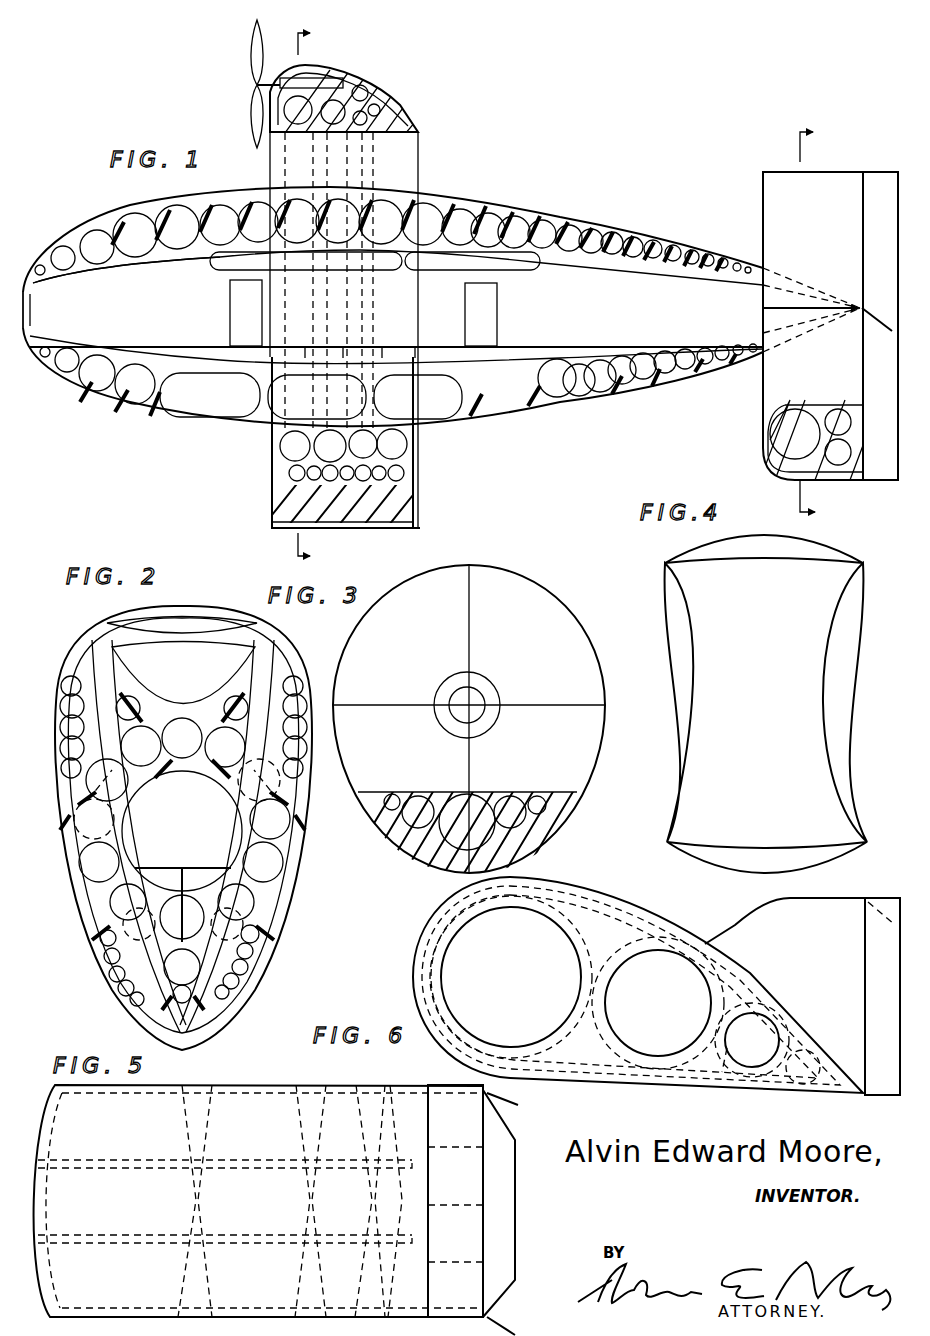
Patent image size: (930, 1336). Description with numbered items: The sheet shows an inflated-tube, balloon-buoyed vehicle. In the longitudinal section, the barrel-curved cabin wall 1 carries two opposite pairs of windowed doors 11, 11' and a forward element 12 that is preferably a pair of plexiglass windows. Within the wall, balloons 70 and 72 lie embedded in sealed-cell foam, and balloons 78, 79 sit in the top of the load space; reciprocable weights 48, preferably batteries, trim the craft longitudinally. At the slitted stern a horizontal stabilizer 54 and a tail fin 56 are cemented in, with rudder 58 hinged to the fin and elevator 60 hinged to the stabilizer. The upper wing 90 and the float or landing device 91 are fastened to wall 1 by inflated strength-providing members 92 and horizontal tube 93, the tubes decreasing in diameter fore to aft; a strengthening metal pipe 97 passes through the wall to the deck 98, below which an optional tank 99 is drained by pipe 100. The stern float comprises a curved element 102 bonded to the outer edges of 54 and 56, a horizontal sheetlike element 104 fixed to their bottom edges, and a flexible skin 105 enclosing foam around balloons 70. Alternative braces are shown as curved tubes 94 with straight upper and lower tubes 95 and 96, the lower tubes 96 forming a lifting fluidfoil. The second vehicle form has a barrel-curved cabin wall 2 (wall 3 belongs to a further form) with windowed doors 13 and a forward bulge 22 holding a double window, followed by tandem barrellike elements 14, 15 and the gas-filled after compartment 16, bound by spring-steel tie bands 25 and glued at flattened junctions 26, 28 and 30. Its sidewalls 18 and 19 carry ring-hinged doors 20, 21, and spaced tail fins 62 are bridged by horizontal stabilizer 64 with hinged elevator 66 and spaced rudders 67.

In FIG. 1, the barrel-curved cabin wall 1 is at (88, 277).
In FIG. 2, the barrel-curved cabin wall 1 is at (142, 786).
In FIG. 1, the barrel-curved cabin wall 2 is at (315, 296).
In FIG. 6, the barrel-curved cabin wall 2 is at (567, 914).
In FIG. 5, the barrel-curved cabin wall 2 is at (50, 1120).
In FIG. 1, the barrel-curved cabin wall 3 is at (822, 321).
In FIG. 3, the barrel-curved cabin wall 3 is at (488, 697).
In FIG. 1, the windowed door 11 is at (246, 313).
In FIG. 1, the windowed door 11' is at (481, 314).
In FIG. 1, the window element 12 is at (33, 311).
In FIG. 6, the windowed door 13 is at (553, 1037).
In FIG. 6, the tandem barrellike element 14 is at (612, 1062).
In FIG. 5, the tandem barrellike element 14 is at (306, 1126).
In FIG. 6, the tandem barrellike element 15 is at (712, 1062).
In FIG. 5, the tandem barrellike element 15 is at (368, 1122).
In FIG. 6, the after compartment 16 is at (803, 1067).
In FIG. 5, the after compartment 16 is at (410, 1105).
In FIG. 6, the vehicle sidewall 18 is at (684, 1054).
In FIG. 6, the vehicle sidewall 19 is at (777, 1024).
In FIG. 6, the door 20 is at (669, 994).
In FIG. 6, the door 21 is at (762, 1050).
In FIG. 5, the forward bulge 22 is at (38, 1272).
In FIG. 6, the tie band 25 is at (632, 918).
In FIG. 5, the tie band 25 is at (68, 1168).
In FIG. 5, the junction 26 is at (192, 1185).
In FIG. 5, the junction 28 is at (308, 1188).
In FIG. 5, the junction 30 is at (372, 1186).
In FIG. 1, the trimming weight 48 is at (320, 352).
In FIG. 1, the horizontal stabilizer 54 is at (763, 309).
In FIG. 3, the horizontal stabilizer 54 is at (410, 705).
In FIG. 1, the tail fin 56 is at (827, 239).
In FIG. 3, the tail fin 56 is at (468, 762).
In FIG. 1, the rudder 58 is at (888, 237).
In FIG. 1, the elevator 60 is at (880, 334).
In FIG. 6, the tail fin 62 is at (836, 957).
In FIG. 5, the horizontal stabilizer 64 is at (467, 1192).
In FIG. 5, the elevator 66 is at (514, 1190).
In FIG. 6, the rudder 67 is at (890, 957).
In FIG. 1, the balloon 70 is at (232, 236).
In FIG. 2, the balloon 70 is at (192, 749).
In FIG. 1, the balloon 72 is at (226, 408).
In FIG. 1, the balloon 78 is at (392, 271).
In FIG. 1, the balloon 79 is at (437, 271).
In FIG. 1, the upper wing 90 is at (339, 66).
In FIG. 1, the float or landing device 91 is at (425, 466).
In FIG. 1, the inflated strength-providing member 92 is at (373, 273).
In FIG. 2, the inflated strength-providing member 92 is at (108, 720).
In FIG. 2, the horizontal inflated tube 93 is at (176, 625).
In FIG. 4, the inflated brace tube 94 is at (700, 660).
In FIG. 4, the straight inflated tube 95 is at (738, 562).
In FIG. 4, the lower inflated tube 96 is at (735, 850).
In FIG. 1, the strengthening metal pipe 97 is at (422, 490).
In FIG. 2, the deck 98 is at (171, 866).
In FIG. 2, the tank 99 is at (178, 925).
In FIG. 2, the pipe 100 is at (192, 878).
In FIG. 3, the curved element 102 is at (562, 604).
In FIG. 3, the horizontal sheetlike element 104 is at (560, 790).
In FIG. 3, the flexible skin 105 is at (555, 822).